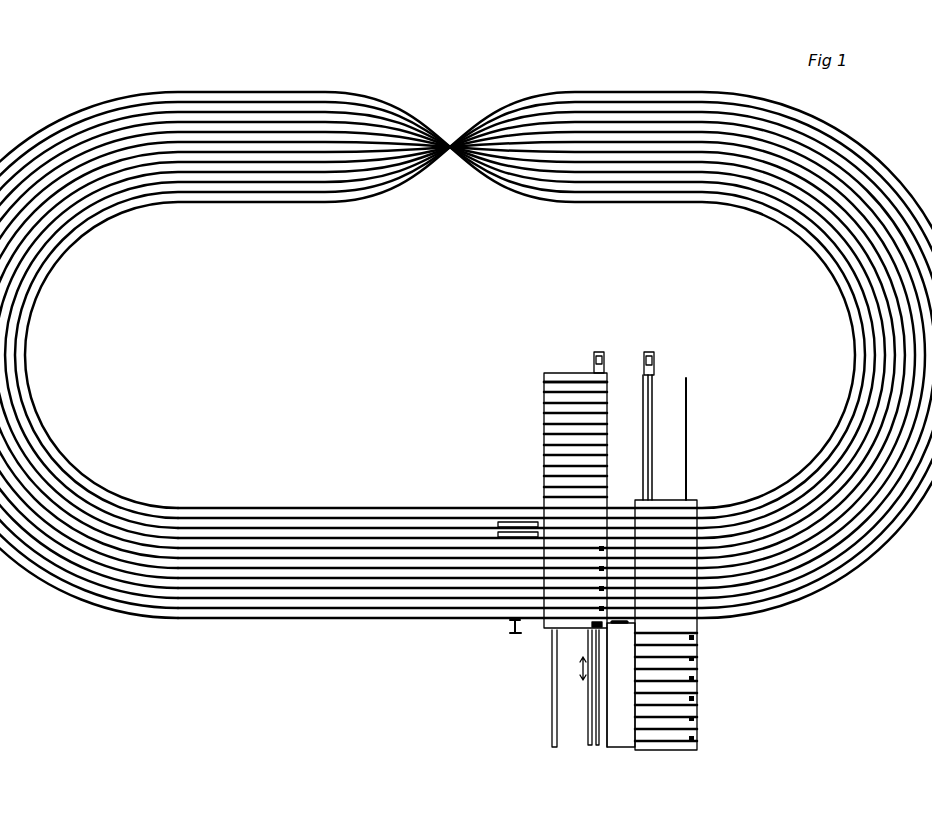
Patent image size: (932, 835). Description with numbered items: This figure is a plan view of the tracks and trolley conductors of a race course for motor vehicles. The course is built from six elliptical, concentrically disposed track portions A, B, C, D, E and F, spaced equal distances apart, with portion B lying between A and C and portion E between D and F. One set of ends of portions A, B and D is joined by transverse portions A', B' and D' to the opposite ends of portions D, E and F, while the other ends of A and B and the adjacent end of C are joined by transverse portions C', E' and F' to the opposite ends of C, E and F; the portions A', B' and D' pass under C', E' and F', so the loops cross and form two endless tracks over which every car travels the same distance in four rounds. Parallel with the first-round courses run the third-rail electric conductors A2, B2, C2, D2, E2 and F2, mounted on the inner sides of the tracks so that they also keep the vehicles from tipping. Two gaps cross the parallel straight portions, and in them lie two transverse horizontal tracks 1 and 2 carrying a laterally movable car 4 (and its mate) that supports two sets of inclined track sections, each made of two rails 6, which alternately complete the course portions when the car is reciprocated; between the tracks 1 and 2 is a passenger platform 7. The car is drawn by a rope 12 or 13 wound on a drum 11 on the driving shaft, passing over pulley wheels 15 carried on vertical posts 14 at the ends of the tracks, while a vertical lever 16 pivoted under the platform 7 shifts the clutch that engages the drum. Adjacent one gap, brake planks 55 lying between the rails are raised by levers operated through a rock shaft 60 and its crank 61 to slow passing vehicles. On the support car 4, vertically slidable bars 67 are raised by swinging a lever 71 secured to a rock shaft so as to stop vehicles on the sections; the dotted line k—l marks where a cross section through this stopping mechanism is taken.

The horizontal track 1 is at (553, 688).
The horizontal track 2 is at (645, 430).
The car 4 is at (546, 393).
The rails 6 is at (581, 398).
The platform 7 is at (621, 684).
The drum 11 is at (590, 715).
The rope 12 is at (588, 698).
The rope 13 is at (652, 470).
The vertical post 14 is at (599, 352).
The pulley wheel 15 is at (606, 360).
The vertical lever 16 is at (628, 624).
The brake plank 55 is at (513, 515).
The rock shaft 60 is at (512, 625).
The crank 61 is at (514, 638).
The vertically slidable bar 67 is at (606, 520).
The lever 71 is at (590, 625).
The section line point k is at (590, 650).
The section line point l is at (618, 650).
The track portion A is at (432, 355).
The track portion B is at (442, 355).
The track portion C is at (452, 355).
The track portion D is at (462, 355).
The track portion E is at (468, 355).
The track portion F is at (478, 355).
The electric conductor A2 is at (857, 342).
The electric conductor B2 is at (878, 357).
The electric conductor C2 is at (900, 370).
The electric conductor D2 is at (917, 388).
The electric conductor E2 is at (931, 407).
The electric conductor F2 is at (931, 423).
The transverse track portion A' is at (560, 208).
The transverse track portion B' is at (536, 195).
The transverse track portion C' is at (493, 190).
The transverse track portion D' is at (558, 99).
The transverse track portion E' is at (524, 95).
The transverse track portion F' is at (492, 89).